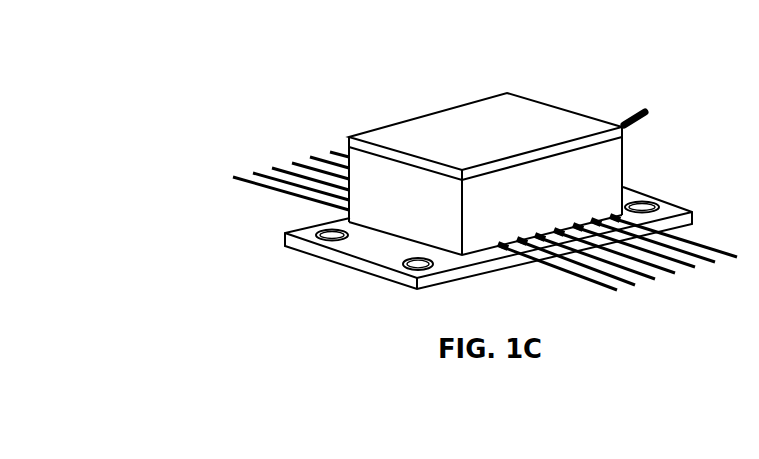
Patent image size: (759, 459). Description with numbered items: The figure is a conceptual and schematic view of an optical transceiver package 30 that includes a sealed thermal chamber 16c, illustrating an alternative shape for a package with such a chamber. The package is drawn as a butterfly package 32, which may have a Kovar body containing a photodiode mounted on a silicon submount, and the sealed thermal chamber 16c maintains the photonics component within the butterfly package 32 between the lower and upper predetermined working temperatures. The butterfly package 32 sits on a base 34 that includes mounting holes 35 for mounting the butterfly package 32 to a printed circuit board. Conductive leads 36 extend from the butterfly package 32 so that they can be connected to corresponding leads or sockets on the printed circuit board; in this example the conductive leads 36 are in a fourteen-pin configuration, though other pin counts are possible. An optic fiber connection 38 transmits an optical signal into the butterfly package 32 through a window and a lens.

The optical transceiver package 30 is at (300, 50).
The sealed thermal chamber 16c is at (530, 110).
The butterfly package 32 is at (605, 168).
The base 34 is at (370, 250).
The mounting holes 35 is at (417, 267).
The conductive leads 36 is at (597, 300).
The optic fiber connection 38 is at (623, 112).